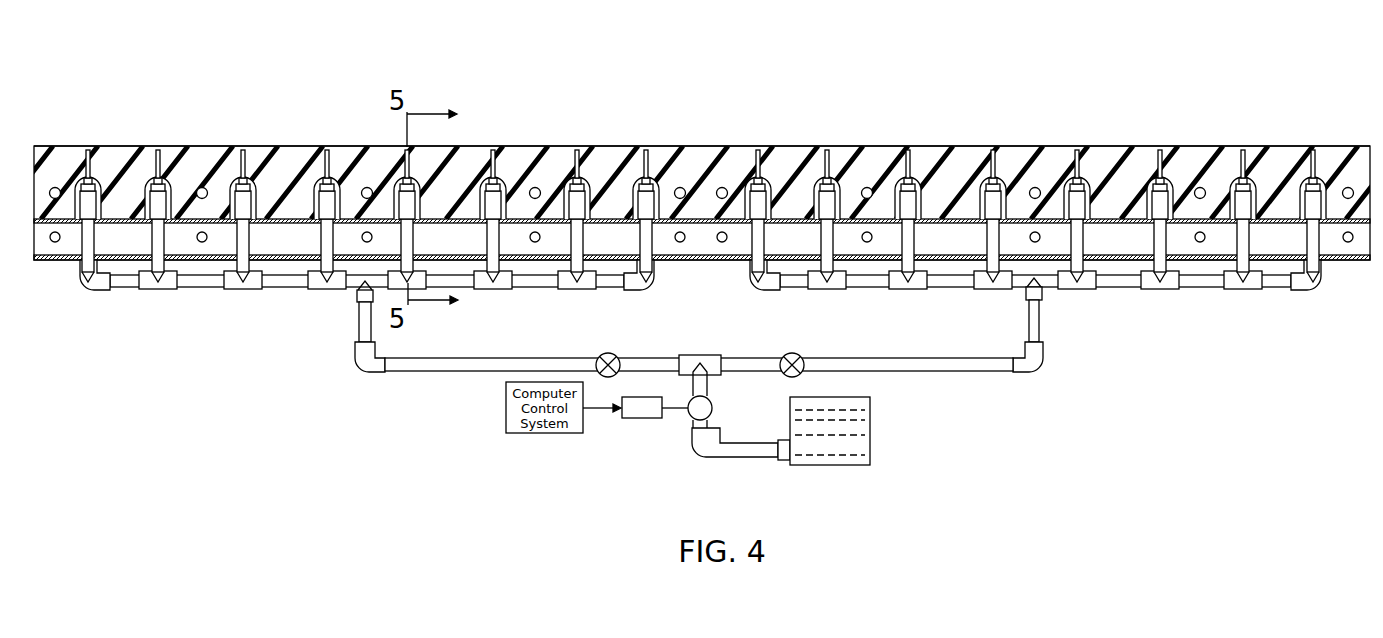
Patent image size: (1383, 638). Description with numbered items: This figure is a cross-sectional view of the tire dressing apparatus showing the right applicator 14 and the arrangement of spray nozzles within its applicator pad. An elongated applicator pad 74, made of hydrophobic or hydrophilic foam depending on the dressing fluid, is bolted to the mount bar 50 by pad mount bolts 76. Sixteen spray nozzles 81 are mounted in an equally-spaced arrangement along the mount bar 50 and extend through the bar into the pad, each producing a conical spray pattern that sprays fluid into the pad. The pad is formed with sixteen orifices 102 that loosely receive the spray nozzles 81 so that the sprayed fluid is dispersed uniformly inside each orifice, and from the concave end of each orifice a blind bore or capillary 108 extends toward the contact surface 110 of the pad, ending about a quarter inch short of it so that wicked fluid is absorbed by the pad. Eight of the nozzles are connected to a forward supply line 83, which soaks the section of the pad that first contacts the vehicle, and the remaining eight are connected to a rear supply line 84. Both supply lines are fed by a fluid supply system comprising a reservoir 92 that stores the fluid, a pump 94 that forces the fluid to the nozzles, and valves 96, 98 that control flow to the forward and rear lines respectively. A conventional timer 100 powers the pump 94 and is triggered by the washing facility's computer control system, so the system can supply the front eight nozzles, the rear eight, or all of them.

The right applicator 14 is at (631, 113).
The contact surface 110 is at (1030, 146).
The applicator pad 74 is at (949, 146).
The pad mount bolts 76 is at (681, 188).
The spray nozzles 81 is at (836, 193).
The orifices 102 is at (484, 210).
The capillary 108 is at (577, 150).
The forward supply line 83 is at (296, 288).
The rear supply line 84 is at (1278, 288).
The mount bar 50 is at (1203, 262).
The valve 96 is at (617, 354).
The valve 98 is at (800, 354).
The pump 94 is at (709, 406).
The reservoir 92 is at (871, 428).
The timer 100 is at (643, 418).